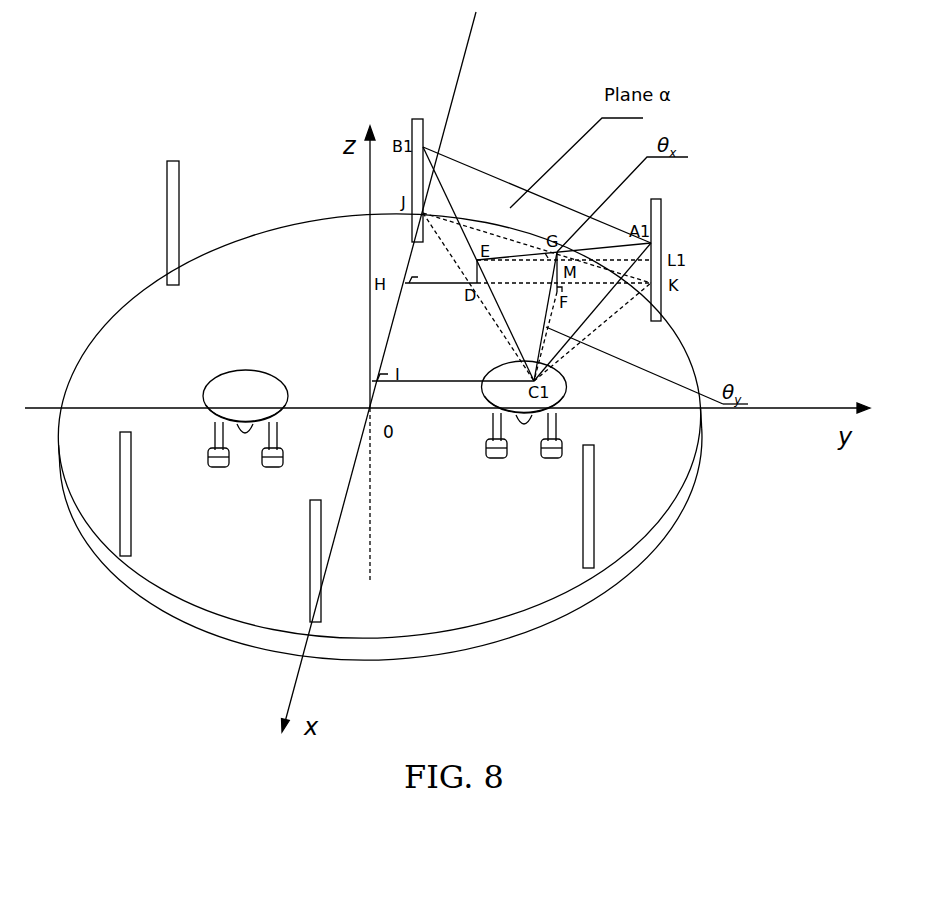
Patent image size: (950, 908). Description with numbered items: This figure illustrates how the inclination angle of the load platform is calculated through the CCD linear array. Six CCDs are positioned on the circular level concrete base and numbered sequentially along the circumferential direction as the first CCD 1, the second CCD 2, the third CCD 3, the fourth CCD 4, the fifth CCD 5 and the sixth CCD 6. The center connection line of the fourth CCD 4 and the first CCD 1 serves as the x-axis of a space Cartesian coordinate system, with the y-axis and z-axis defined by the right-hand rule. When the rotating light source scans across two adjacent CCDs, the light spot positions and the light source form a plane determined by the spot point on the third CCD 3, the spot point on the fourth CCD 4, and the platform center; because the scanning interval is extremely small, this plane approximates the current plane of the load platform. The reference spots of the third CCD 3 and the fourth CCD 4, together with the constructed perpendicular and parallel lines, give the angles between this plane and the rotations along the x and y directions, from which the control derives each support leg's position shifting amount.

The number ① CCD 1 is at (300, 561).
The number ② CCD 2 is at (601, 506).
The number ③ CCD 3 is at (667, 249).
The number ④ CCD 4 is at (428, 174).
The number ⑤ CCD 5 is at (185, 220).
The number ⑥ CCD 6 is at (140, 494).